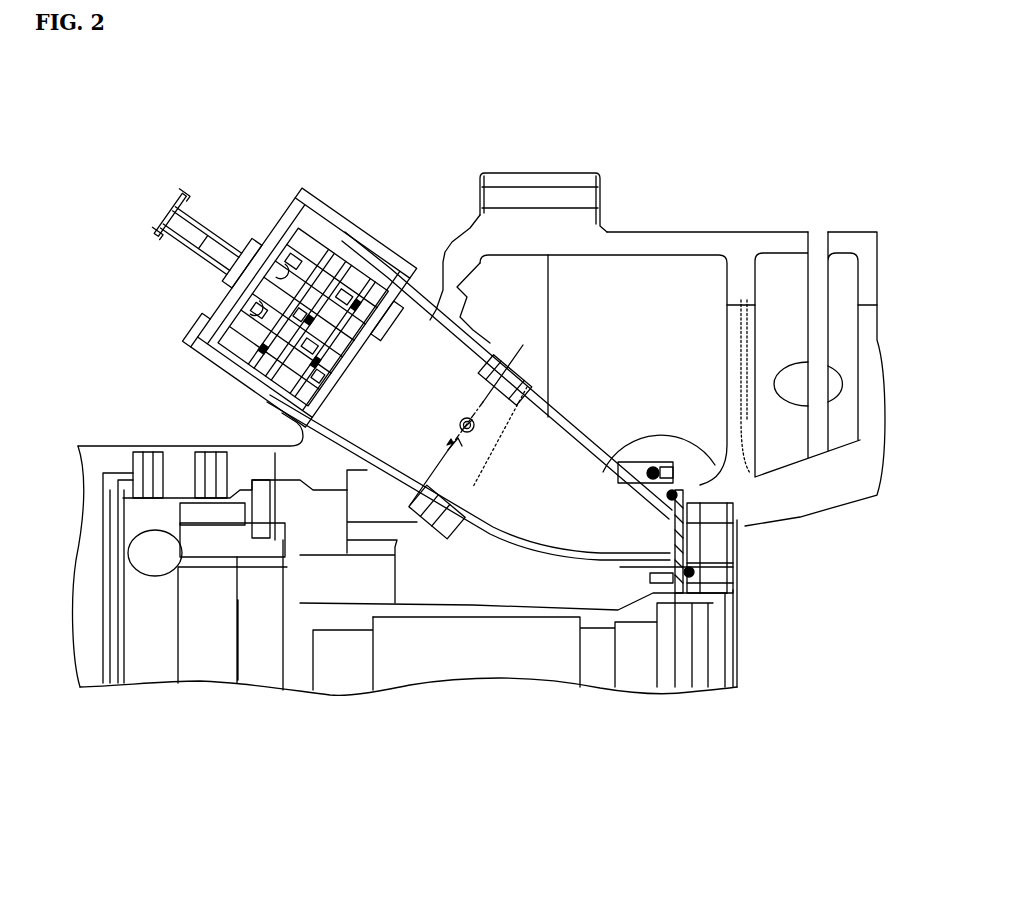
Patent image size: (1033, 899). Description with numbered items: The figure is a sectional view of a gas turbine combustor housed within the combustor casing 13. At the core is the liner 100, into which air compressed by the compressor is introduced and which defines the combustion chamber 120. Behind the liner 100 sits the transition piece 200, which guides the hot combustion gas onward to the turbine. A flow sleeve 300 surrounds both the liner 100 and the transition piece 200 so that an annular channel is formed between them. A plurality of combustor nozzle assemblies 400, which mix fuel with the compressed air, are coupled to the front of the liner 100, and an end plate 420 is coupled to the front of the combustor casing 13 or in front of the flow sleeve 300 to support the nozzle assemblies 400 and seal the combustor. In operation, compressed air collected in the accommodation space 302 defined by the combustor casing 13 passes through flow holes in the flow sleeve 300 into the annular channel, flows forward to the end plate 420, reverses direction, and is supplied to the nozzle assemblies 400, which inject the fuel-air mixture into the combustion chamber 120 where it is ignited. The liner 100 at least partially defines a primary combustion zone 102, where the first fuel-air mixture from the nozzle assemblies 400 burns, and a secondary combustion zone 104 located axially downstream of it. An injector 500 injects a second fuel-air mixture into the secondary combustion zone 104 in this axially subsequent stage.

The combustor casing 13 is at (648, 243).
The liner 100 is at (440, 302).
The primary combustion zone 102 is at (363, 400).
The secondary combustion zone 104 is at (455, 442).
The combustion chamber 120 is at (442, 382).
The transition piece 200 is at (652, 462).
The flow sleeve 300 is at (490, 343).
The accommodation space 302 is at (680, 361).
The combustor nozzle assembly 400 is at (236, 308).
The end plate 420 is at (287, 222).
The injector 500 is at (453, 443).